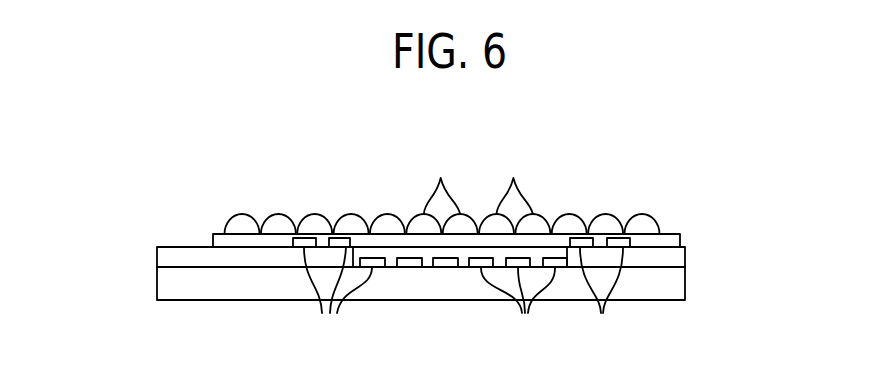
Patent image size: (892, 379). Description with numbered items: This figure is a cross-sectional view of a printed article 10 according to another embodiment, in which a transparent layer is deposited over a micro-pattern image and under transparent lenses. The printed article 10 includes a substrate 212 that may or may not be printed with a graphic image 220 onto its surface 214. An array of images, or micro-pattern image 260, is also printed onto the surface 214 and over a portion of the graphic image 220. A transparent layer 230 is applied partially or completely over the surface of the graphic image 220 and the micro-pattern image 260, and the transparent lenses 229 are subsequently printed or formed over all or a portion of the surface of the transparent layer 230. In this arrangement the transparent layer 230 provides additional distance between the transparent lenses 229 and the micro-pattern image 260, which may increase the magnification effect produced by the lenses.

The printed article 10 is at (357, 140).
The substrate 212 is at (680, 284).
The surface 214 is at (157, 268).
The graphic image 220 is at (157, 257).
The transparent lenses 229 is at (480, 182).
The transparent layer 230 is at (227, 232).
The micro-pattern image 260 is at (463, 295).